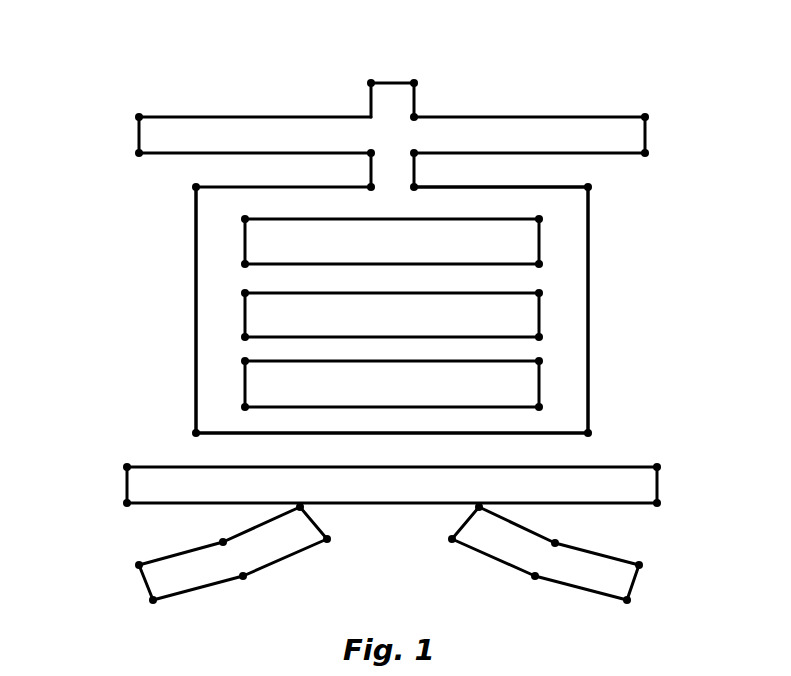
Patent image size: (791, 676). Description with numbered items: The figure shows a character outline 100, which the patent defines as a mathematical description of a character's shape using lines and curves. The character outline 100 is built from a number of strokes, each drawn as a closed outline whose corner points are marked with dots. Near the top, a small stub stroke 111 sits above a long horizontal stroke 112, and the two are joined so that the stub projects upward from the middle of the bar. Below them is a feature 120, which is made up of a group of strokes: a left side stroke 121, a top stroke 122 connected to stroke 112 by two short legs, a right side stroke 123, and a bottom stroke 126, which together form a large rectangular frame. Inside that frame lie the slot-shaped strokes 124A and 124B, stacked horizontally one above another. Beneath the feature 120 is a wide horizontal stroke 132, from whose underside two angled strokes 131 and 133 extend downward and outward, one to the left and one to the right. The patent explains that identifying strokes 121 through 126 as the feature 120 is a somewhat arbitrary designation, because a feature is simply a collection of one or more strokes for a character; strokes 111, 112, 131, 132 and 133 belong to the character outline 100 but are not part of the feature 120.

The character outline 100 is at (602, 61).
The stroke 111 is at (393, 80).
The stroke 112 is at (645, 135).
The feature 120 is at (346, 308).
The stroke 121 is at (196, 267).
The stroke 122 is at (503, 188).
The stroke 123 is at (588, 265).
The stroke 124A is at (317, 293).
The stroke 124B is at (438, 337).
The stroke 126 is at (502, 433).
The stroke 131 is at (143, 582).
The stroke 132 is at (657, 485).
The stroke 133 is at (633, 582).